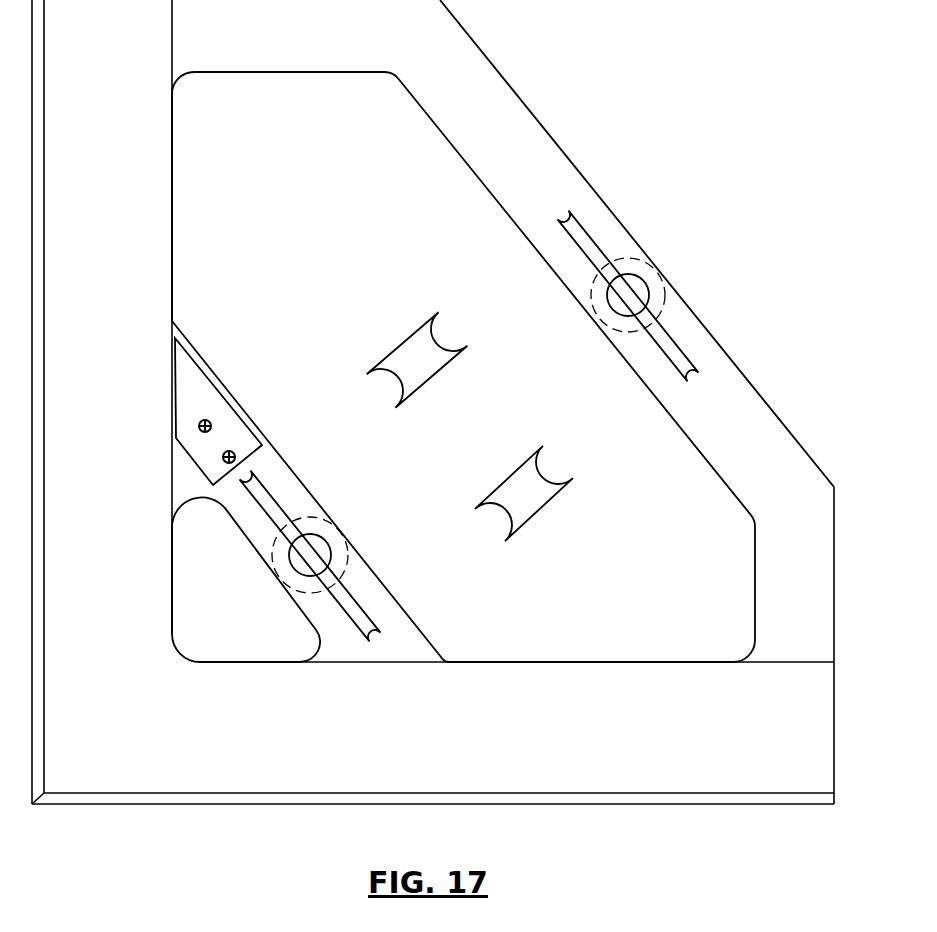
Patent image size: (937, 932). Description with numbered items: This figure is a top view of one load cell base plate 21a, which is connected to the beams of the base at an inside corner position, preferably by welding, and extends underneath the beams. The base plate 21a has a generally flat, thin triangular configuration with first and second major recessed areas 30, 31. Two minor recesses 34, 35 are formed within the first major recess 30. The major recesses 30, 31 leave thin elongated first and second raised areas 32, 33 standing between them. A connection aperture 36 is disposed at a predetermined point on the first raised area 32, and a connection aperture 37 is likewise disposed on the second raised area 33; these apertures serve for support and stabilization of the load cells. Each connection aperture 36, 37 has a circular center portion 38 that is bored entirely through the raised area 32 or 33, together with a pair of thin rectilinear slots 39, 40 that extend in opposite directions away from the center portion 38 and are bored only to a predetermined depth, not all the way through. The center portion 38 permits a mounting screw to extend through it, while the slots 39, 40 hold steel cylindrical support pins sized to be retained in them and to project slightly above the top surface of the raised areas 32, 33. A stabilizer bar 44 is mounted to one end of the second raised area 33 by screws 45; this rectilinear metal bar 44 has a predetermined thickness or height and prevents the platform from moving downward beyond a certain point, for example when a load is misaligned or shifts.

The base plate 21a is at (690, 212).
The first major recessed area 30 is at (463, 367).
The second major recessed area 31 is at (246, 579).
The first raised area 32 is at (523, 137).
The second raised area 33 is at (282, 477).
The minor recess 34 is at (420, 330).
The minor recess 35 is at (562, 483).
The connection aperture 36 is at (702, 393).
The connection aperture 37 is at (362, 585).
The circular center portion 38 is at (636, 294).
The slot 39 is at (583, 235).
The slot 40 is at (683, 362).
The stabilizer bar 44 is at (195, 388).
The screws 45 is at (212, 425).